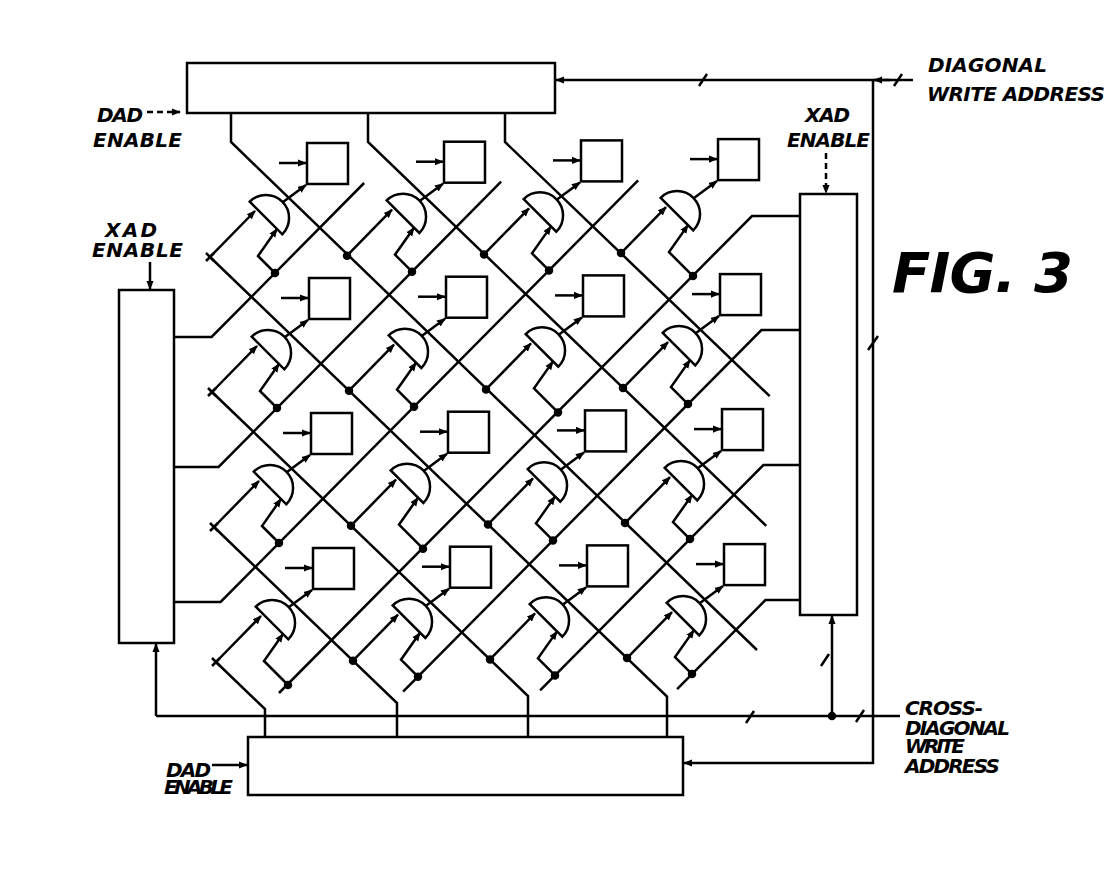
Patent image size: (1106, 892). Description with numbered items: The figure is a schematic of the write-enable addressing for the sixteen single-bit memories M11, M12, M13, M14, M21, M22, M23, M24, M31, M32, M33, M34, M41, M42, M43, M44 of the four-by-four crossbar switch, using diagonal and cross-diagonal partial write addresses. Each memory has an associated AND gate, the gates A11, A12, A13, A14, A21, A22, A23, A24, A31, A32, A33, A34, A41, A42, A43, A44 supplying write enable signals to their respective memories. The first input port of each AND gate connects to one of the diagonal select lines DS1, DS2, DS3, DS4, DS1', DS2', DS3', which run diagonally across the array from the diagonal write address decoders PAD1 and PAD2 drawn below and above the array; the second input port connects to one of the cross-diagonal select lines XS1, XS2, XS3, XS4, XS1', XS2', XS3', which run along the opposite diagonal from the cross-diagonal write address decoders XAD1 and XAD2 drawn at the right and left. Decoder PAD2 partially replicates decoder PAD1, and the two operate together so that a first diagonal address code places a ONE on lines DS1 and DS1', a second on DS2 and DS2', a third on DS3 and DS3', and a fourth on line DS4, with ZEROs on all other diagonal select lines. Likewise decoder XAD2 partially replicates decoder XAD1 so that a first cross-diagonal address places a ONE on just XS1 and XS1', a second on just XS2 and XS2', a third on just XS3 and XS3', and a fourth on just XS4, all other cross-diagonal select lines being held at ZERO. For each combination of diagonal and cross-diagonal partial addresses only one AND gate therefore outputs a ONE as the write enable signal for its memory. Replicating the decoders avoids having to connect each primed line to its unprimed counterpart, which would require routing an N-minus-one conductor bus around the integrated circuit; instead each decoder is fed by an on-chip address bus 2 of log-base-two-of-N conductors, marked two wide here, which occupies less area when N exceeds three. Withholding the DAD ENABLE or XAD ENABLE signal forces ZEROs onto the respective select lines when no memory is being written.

The memory M11 is at (312, 174).
The memory M12 is at (449, 173).
The memory M13 is at (586, 171).
The memory M14 is at (723, 170).
The memory M21 is at (314, 309).
The memory M22 is at (451, 308).
The memory M23 is at (588, 306).
The memory M24 is at (725, 305).
The memory M31 is at (316, 444).
The memory M32 is at (453, 443).
The memory M33 is at (590, 441).
The memory M34 is at (727, 440).
The memory M41 is at (318, 579).
The memory M42 is at (455, 578).
The memory M43 is at (592, 576).
The memory M44 is at (729, 575).
The AND gate A11 is at (256, 230).
The AND gate A12 is at (393, 229).
The AND gate A13 is at (530, 227).
The AND gate A14 is at (667, 230).
The AND gate A21 is at (258, 365).
The AND gate A22 is at (395, 364).
The AND gate A23 is at (532, 366).
The AND gate A24 is at (669, 361).
The AND gate A31 is at (260, 500).
The AND gate A32 is at (397, 503).
The AND gate A33 is at (534, 497).
The AND gate A34 is at (671, 496).
The AND gate A41 is at (262, 639).
The AND gate A42 is at (399, 634).
The AND gate A43 is at (536, 632).
The AND gate A44 is at (673, 631).
The diagonal partial address decoder PAD1 is at (512, 763).
The further diagonal partial address decoder PAD2 is at (187, 85).
The cross-diagonal partial address decoder XAD1 is at (806, 616).
The further cross-diagonal partial address decoder XAD2 is at (135, 644).
The diagonal select line DS1 is at (231, 699).
The diagonal select line DS2 is at (305, 632).
The diagonal select line DS3 is at (370, 564).
The diagonal select line DS4 is at (649, 690).
The diagonal select line DS1' is at (473, 381).
The diagonal select line DS2' is at (547, 319).
The diagonal select line DS3' is at (614, 254).
The cross-diagonal select line XS1 is at (738, 625).
The cross-diagonal select line XS2 is at (670, 565).
The cross-diagonal select line XS3 is at (601, 499).
The cross-diagonal select line XS4 is at (539, 441).
The cross-diagonal select line XS1' is at (406, 391).
The cross-diagonal select line XS2' is at (337, 324).
The cross-diagonal select line XS3' is at (269, 260).
The two-conductor address bus 2 is at (534, 404).